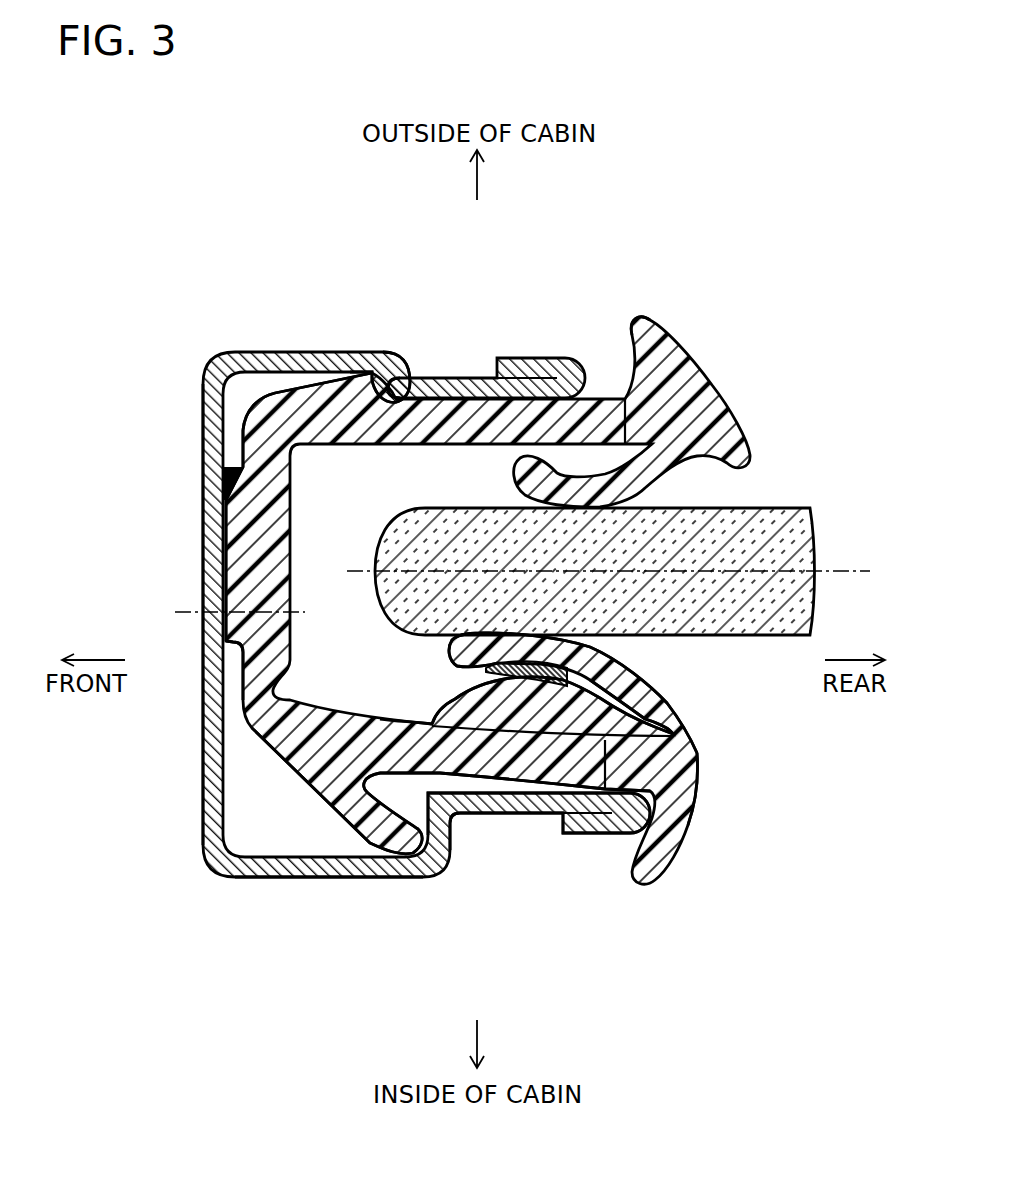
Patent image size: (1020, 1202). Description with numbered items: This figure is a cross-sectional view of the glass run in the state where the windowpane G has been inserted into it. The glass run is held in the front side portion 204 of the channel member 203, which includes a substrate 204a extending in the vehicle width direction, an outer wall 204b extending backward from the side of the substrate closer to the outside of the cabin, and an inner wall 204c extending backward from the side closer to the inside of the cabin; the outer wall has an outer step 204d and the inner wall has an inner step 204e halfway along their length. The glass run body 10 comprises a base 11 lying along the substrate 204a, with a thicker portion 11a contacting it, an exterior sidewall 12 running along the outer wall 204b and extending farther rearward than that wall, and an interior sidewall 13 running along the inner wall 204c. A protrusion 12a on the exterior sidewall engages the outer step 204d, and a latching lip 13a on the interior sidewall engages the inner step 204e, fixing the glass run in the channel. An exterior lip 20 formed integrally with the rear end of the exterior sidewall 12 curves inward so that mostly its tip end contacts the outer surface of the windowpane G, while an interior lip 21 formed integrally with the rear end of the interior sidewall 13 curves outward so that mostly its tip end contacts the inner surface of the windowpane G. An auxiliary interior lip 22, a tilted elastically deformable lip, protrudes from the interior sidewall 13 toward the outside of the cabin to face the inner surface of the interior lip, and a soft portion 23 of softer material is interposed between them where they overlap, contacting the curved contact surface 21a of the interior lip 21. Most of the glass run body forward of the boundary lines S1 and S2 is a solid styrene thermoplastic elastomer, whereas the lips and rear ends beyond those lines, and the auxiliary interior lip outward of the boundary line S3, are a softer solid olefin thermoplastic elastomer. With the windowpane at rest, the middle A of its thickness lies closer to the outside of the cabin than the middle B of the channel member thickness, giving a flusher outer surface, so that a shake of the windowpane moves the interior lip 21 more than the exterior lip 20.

The channel member 203 is at (185, 269).
The front side portion 204 is at (309, 341).
The substrate 204a is at (205, 765).
The outer wall 204b is at (358, 352).
The inner wall 204c is at (290, 880).
The outer step 204d is at (385, 383).
The inner step 204e is at (414, 840).
The glass run body 10 is at (231, 452).
The base 11 is at (240, 683).
The thicker portion 11a is at (250, 537).
The exterior sidewall 12 is at (425, 399).
The protrusion 12a is at (410, 377).
The interior sidewall 13 is at (500, 790).
The latching lip 13a is at (370, 843).
The exterior lip 20 is at (657, 487).
The interior lip 21 is at (620, 655).
The contact surface 21a is at (640, 697).
The auxiliary interior lip 22 is at (447, 700).
The soft portion 23 is at (488, 668).
The windowpane G is at (377, 551).
The middle of the thickness of the windowpane A is at (848, 571).
The middle of the thickness of the channel member B is at (176, 612).
The boundary line S1 is at (635, 390).
The boundary line S2 is at (648, 770).
The boundary line S3 is at (440, 720).